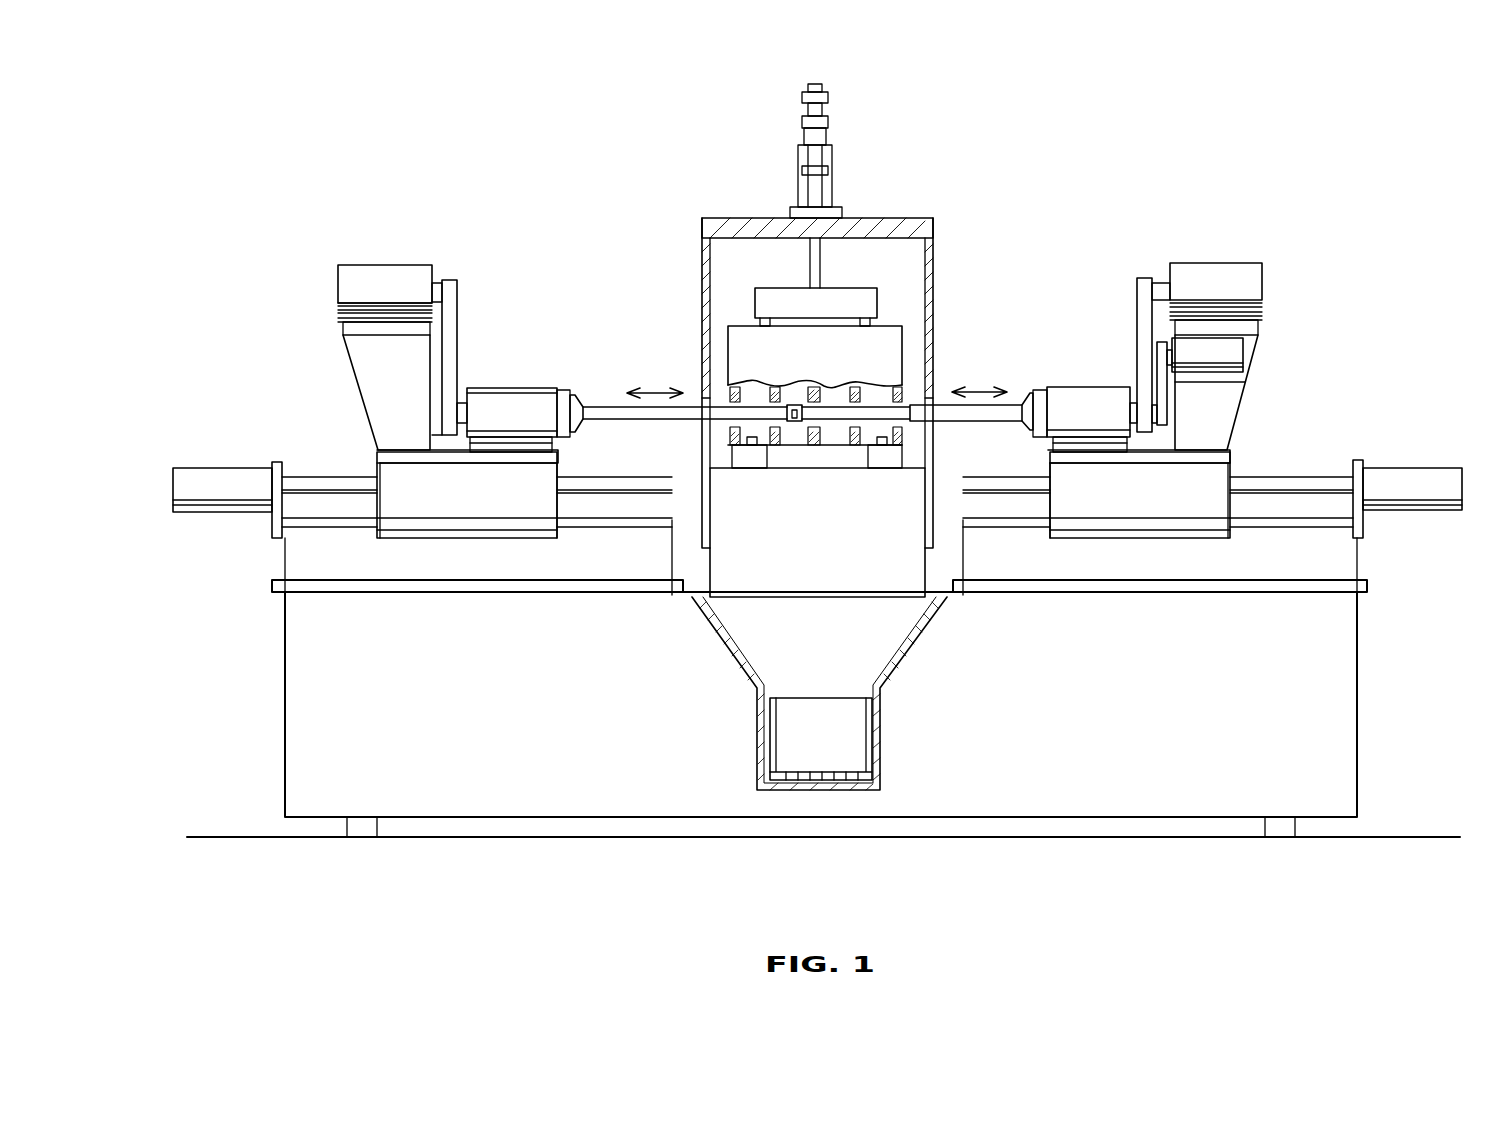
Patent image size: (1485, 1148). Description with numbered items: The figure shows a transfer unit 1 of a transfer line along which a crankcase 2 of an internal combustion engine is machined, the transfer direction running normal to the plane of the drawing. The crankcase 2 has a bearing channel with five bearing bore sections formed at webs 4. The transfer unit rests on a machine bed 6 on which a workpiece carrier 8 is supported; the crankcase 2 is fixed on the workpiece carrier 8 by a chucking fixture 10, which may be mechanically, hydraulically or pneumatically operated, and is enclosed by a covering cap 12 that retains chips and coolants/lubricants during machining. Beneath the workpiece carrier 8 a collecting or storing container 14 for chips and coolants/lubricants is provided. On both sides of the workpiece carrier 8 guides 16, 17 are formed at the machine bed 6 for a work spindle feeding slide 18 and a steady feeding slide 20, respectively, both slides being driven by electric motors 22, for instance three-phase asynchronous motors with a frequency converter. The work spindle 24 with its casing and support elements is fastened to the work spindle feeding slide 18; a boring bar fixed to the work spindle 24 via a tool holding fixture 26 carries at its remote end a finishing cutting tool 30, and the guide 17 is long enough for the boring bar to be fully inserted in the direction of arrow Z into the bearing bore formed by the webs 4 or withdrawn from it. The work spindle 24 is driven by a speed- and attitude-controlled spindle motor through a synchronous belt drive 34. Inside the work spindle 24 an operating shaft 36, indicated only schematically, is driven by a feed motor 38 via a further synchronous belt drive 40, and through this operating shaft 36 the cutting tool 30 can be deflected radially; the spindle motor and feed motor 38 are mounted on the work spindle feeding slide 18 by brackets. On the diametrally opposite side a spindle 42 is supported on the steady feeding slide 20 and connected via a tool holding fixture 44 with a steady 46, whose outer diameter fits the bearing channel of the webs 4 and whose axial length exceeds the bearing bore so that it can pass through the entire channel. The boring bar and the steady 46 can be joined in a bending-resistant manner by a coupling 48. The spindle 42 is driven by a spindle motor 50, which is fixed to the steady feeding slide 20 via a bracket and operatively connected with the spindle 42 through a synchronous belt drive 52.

The transfer unit 1 is at (960, 178).
The crankcase 2 is at (730, 352).
The webs 4 is at (892, 352).
The machine bed 6 is at (567, 729).
The workpiece carrier 8 is at (837, 566).
The chucking fixture 10 is at (845, 295).
The covering cap 12 is at (762, 222).
The collecting or storing container 14 is at (858, 740).
The guide 16 is at (320, 530).
The guide 17 is at (1292, 525).
The work spindle feeding slide 18 is at (1145, 510).
The steady feeding slide 20 is at (445, 510).
The electric motors 22 is at (210, 478).
The work spindle 24 is at (1083, 405).
The tool holding fixture 26 is at (1020, 405).
The cutting tool 30 is at (800, 425).
The synchronous belt drive 34 is at (1143, 315).
The operating shaft 36 is at (1170, 412).
The feed motor 38 is at (1228, 355).
The synchronous belt drive 40 is at (1165, 388).
The spindle 42 is at (520, 398).
The tool holding fixture 44 is at (578, 395).
The steady 46 is at (655, 415).
The coupling 48 is at (787, 424).
The spindle motor 50 is at (380, 285).
The synchronous belt drive 52 is at (453, 322).